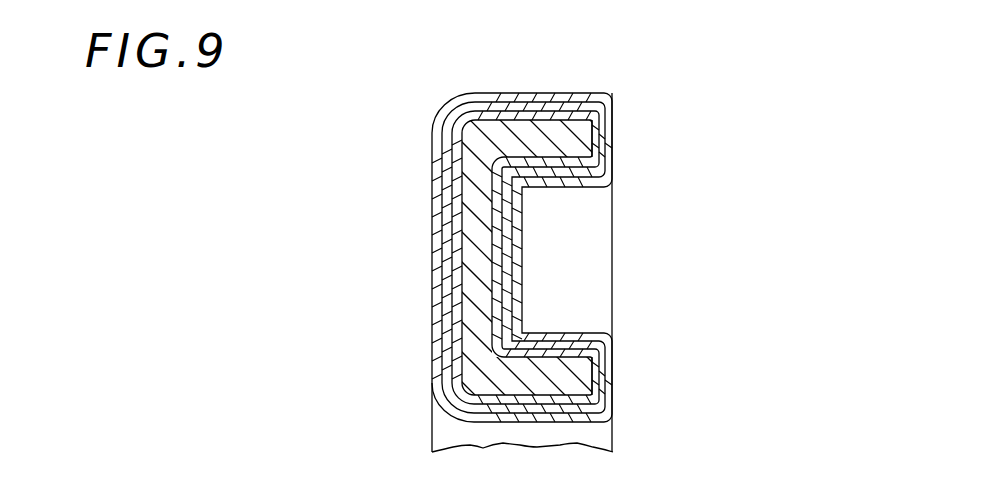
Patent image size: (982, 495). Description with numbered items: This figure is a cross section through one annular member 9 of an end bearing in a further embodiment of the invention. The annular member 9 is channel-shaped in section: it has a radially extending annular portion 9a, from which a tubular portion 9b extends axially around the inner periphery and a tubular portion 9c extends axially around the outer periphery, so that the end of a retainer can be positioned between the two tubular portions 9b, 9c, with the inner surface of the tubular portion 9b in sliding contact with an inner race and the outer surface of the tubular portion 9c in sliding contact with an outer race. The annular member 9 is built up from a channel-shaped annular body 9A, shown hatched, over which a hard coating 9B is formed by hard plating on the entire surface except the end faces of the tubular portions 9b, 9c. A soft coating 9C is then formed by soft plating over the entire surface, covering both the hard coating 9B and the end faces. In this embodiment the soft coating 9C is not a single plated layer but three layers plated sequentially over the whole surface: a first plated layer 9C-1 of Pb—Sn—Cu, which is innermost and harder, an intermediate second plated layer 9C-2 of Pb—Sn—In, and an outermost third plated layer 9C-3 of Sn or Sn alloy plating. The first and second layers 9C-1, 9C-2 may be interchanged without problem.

The annular member 9 is at (631, 264).
The annular body 9A is at (480, 271).
The annular portion 9a is at (474, 209).
The tubular portion 9b is at (585, 384).
The tubular portion 9c is at (578, 146).
The hard coating 9B is at (447, 171).
The soft coating 9C is at (603, 92).
The first plated layer 9C-1 is at (456, 324).
The second plated layer 9C-2 is at (447, 357).
The third plated layer 9C-3 is at (437, 386).